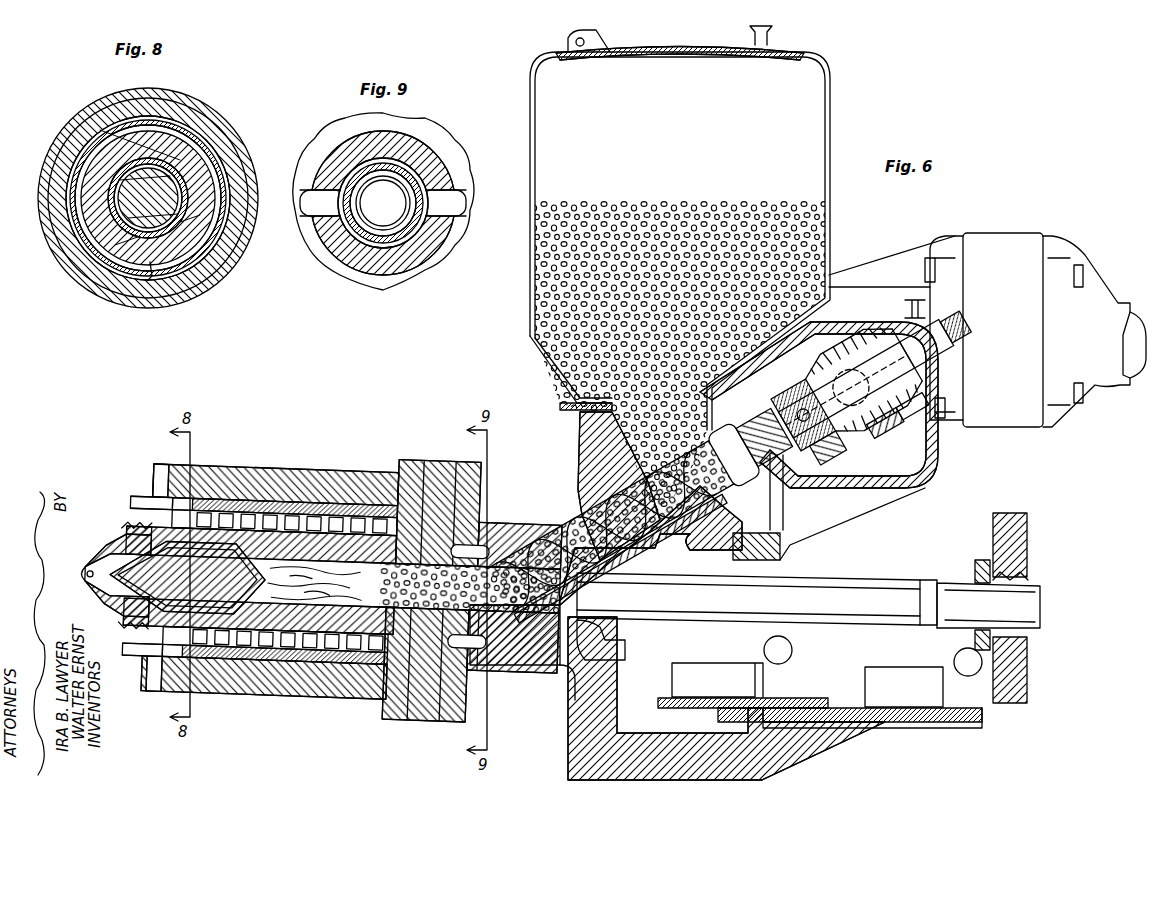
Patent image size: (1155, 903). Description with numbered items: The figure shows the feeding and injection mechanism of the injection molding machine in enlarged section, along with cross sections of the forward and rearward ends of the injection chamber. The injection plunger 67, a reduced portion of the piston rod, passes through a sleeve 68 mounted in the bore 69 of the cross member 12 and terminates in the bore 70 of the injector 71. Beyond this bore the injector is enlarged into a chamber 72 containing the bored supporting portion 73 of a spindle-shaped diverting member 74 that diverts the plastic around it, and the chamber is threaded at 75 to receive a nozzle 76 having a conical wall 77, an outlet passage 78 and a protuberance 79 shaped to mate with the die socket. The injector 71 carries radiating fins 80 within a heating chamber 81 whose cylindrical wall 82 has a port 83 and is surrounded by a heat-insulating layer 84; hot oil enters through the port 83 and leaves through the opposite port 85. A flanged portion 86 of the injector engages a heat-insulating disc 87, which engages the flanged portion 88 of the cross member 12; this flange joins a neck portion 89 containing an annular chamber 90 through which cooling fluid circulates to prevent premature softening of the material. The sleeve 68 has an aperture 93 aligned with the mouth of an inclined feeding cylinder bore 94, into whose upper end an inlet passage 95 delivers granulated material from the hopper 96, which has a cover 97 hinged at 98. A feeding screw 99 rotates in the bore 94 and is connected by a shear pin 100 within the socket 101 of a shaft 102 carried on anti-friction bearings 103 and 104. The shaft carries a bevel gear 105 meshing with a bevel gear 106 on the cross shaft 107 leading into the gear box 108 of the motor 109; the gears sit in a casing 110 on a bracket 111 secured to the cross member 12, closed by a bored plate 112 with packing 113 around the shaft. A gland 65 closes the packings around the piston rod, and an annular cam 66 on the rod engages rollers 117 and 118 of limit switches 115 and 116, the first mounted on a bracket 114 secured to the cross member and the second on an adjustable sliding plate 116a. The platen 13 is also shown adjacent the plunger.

In FIG. 6, the cross member 12 is at (760, 558).
In FIG. 6, the platen 13 is at (1026, 528).
In FIG. 6, the gland 65 is at (992, 560).
In FIG. 6, the annular cam 66 is at (968, 565).
In FIG. 6, the injection plunger 67 is at (866, 580).
In FIG. 9, the sleeve 68 is at (383, 225).
In FIG. 6, the sleeve 68 is at (614, 532).
In FIG. 9, the bore 69 is at (408, 225).
In FIG. 6, the bore 69 is at (618, 628).
In FIG. 9, the bore 70 is at (375, 222).
In FIG. 6, the injector 71 is at (348, 480).
In FIG. 6, the chamber 72 is at (246, 510).
In FIG. 8, the bored supporting portion 73 is at (170, 165).
In FIG. 6, the bored supporting portion 73 is at (200, 520).
In FIG. 8, the spindle-shaped diverting member 74 is at (175, 192).
In FIG. 6, the spindle-shaped diverting member 74 is at (220, 612).
In FIG. 6, the threads 75 is at (140, 505).
In FIG. 6, the nozzle 76 is at (122, 638).
In FIG. 6, the conical wall 77 is at (118, 530).
In FIG. 6, the outlet passage 78 is at (92, 590).
In FIG. 6, the protuberance 79 is at (86, 570).
In FIG. 8, the radiating fins 80 is at (168, 125).
In FIG. 8, the heating chamber 81 is at (205, 282).
In FIG. 6, the heating chamber 81 is at (338, 690).
In FIG. 8, the cylindrical wall 82 is at (152, 278).
In FIG. 6, the port 83 is at (378, 700).
In FIG. 8, the heat-insulating layer 84 is at (232, 245).
In FIG. 6, the heat-insulating layer 84 is at (292, 470).
In FIG. 6, the port 85 is at (156, 468).
In FIG. 6, the flanged portion 86 is at (403, 712).
In FIG. 6, the heat-insulating disc 87 is at (440, 468).
In FIG. 9, the flanged portion 88 is at (458, 210).
In FIG. 6, the flanged portion 88 is at (470, 680).
In FIG. 6, the neck portion 89 is at (555, 665).
In FIG. 9, the annular chamber 90 is at (415, 178).
In FIG. 6, the annular chamber 90 is at (482, 535).
In FIG. 6, the aperture 93 is at (505, 556).
In FIG. 6, the inclined feeding cylinder bore 94 is at (540, 556).
In FIG. 6, the inlet passage 95 is at (578, 450).
In FIG. 6, the hopper 96 is at (532, 305).
In FIG. 6, the cover 97 is at (712, 50).
In FIG. 6, the hinge 98 is at (580, 40).
In FIG. 6, the feeding screw 99 is at (688, 534).
In FIG. 6, the shear pin 100 is at (735, 492).
In FIG. 6, the socket 101 is at (909, 445).
In FIG. 6, the shaft 102 is at (938, 423).
In FIG. 6, the anti-friction bearing 103 is at (832, 558).
In FIG. 6, the anti-friction bearing 104 is at (895, 334).
In FIG. 6, the bevel gear 105 is at (845, 402).
In FIG. 6, the bevel gear 106 is at (935, 398).
In FIG. 6, the cross shaft 107 is at (850, 445).
In FIG. 6, the gear box 108 is at (878, 286).
In FIG. 6, the motor 109 is at (1012, 243).
In FIG. 6, the casing 110 is at (938, 455).
In FIG. 6, the bracket 111 is at (795, 550).
In FIG. 6, the bored plate 112 is at (780, 498).
In FIG. 6, the packing 113 is at (790, 425).
In FIG. 6, the bracket 114 is at (822, 725).
In FIG. 6, the limit switch 115 is at (895, 672).
In FIG. 6, the limit switch 116 is at (673, 680).
In FIG. 6, the sliding plate 116a is at (815, 708).
In FIG. 6, the roller 117 is at (958, 655).
In FIG. 6, the roller 118 is at (786, 648).